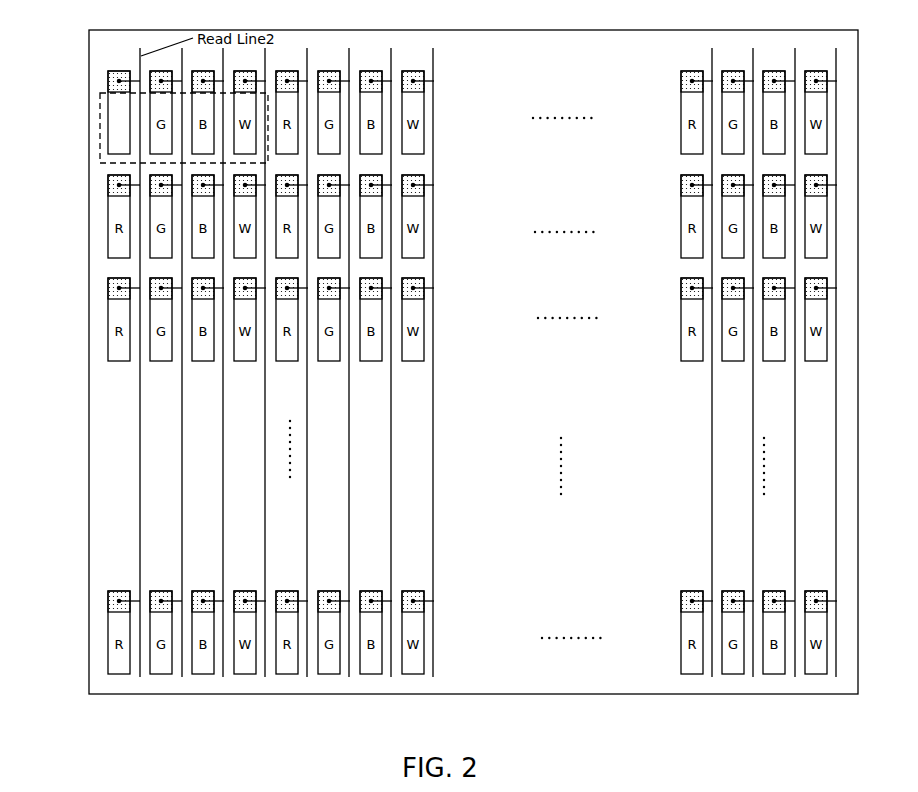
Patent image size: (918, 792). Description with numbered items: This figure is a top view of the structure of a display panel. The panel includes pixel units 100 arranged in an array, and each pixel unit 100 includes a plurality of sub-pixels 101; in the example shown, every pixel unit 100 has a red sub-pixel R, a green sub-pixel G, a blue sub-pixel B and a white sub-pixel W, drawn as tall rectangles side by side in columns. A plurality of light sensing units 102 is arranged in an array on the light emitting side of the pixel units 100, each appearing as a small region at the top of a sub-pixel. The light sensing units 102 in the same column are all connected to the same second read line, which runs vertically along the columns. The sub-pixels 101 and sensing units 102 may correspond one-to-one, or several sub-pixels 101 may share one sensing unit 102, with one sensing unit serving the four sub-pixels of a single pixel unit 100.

The pixel unit 100 is at (152, 98).
The sub-pixel 101 is at (88, 93).
The light sensing unit 102 is at (120, 71).